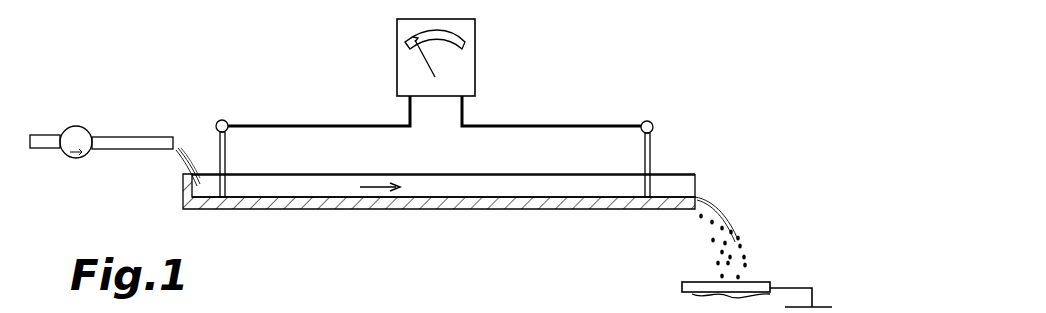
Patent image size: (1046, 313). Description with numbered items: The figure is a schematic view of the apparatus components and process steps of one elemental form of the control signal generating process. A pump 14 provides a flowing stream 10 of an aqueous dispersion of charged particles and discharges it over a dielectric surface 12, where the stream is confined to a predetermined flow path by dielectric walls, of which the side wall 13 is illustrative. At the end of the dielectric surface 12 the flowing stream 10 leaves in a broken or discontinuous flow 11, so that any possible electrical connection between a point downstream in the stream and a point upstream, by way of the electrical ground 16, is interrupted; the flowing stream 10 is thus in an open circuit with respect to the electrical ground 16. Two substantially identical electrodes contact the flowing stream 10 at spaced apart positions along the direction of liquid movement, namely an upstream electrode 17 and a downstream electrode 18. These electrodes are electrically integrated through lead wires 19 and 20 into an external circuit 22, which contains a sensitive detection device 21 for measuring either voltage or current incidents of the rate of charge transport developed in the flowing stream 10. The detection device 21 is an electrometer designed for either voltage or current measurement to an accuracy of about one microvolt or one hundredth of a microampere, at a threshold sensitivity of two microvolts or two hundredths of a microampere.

The flowing stream 10 is at (332, 190).
The broken or discontinuous flow 11 is at (740, 225).
The dielectric surface 12 is at (476, 209).
The side wall 13 is at (520, 174).
The pump 14 is at (84, 125).
The electrical ground 16 is at (750, 282).
The upstream electrode 17 is at (228, 142).
The downstream electrode 18 is at (657, 158).
The lead wire 19 is at (518, 125).
The lead wire 20 is at (325, 125).
The detection device 21 is at (397, 50).
The external circuit 22 is at (523, 60).